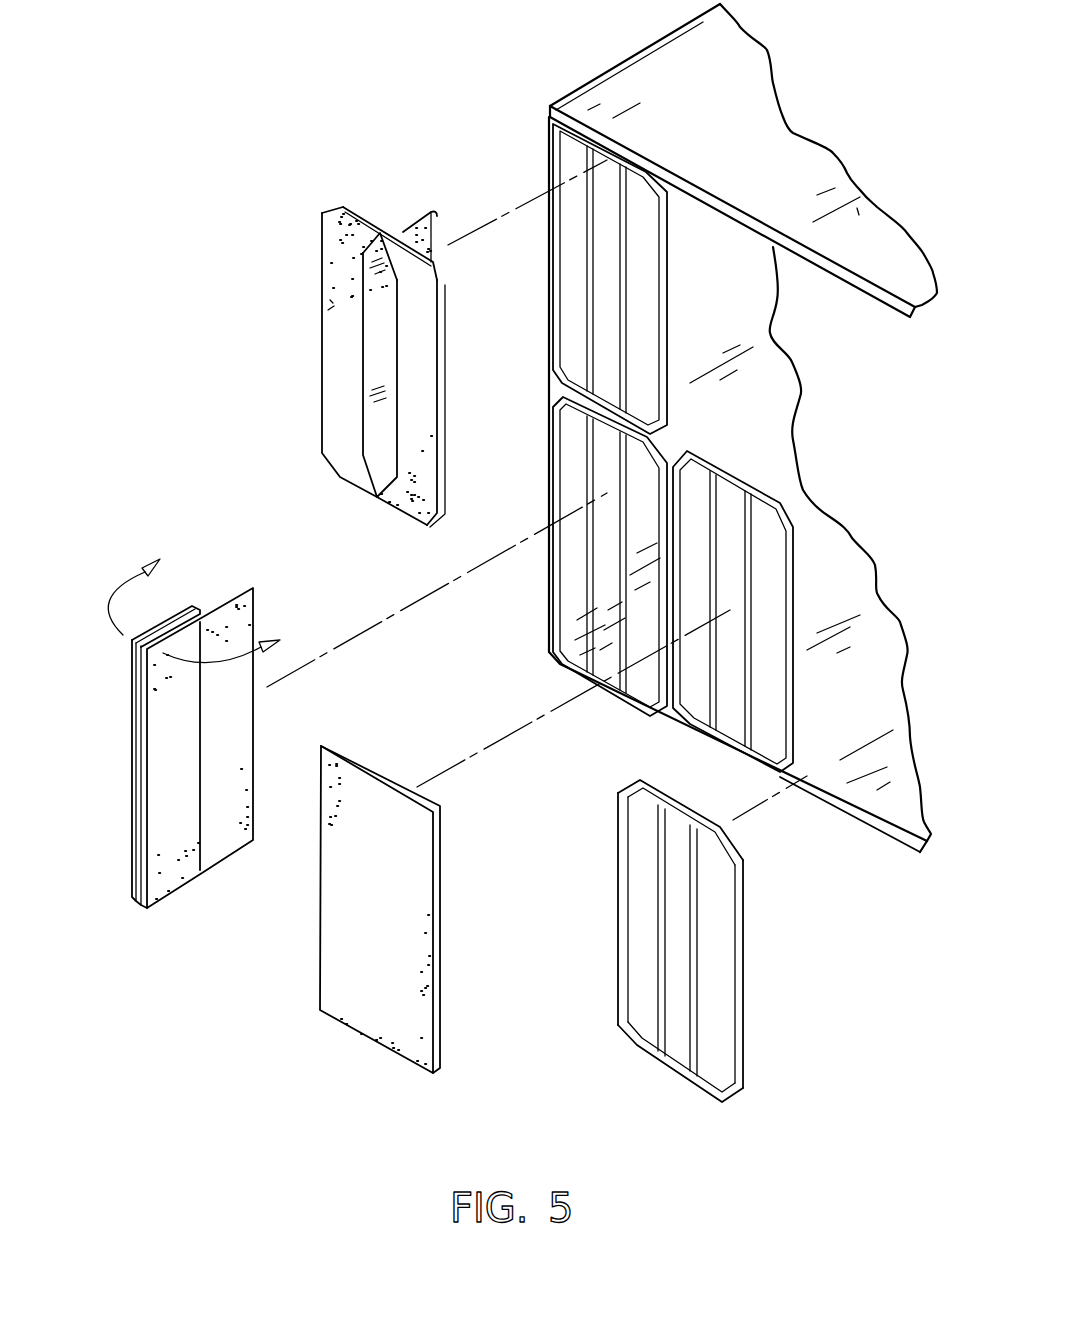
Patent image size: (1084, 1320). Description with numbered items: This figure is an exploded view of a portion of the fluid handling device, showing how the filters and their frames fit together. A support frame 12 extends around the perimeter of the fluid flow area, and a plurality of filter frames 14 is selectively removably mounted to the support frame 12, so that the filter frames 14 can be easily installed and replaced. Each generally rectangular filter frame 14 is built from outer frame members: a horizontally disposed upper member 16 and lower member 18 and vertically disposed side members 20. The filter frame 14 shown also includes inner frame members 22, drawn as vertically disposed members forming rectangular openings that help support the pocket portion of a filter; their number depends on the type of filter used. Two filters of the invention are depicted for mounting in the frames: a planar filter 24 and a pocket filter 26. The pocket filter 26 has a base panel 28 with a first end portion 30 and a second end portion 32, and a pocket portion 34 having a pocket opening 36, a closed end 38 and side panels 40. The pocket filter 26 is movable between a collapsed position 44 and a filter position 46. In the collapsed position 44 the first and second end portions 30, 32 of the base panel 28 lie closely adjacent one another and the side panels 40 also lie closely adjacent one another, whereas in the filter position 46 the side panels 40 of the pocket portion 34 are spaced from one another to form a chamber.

The support frame 12 is at (892, 837).
The filter frame 14 is at (548, 148).
The upper member 16 is at (688, 935).
The lower member 18 is at (670, 1075).
The side members 20 is at (627, 930).
The inner frame members 22 is at (657, 1005).
The planar filter 24 is at (370, 985).
The pocket filter 26 is at (357, 296).
The base panel 28 is at (383, 233).
The first end portion 30 is at (333, 402).
The second end portion 32 is at (420, 400).
The pocket portion 34 is at (403, 232).
The pocket opening 36 is at (367, 300).
The closed end 38 is at (251, 691).
The side panels 40 is at (215, 569).
The collapsed position 44 is at (100, 616).
The filter position 46 is at (207, 217).